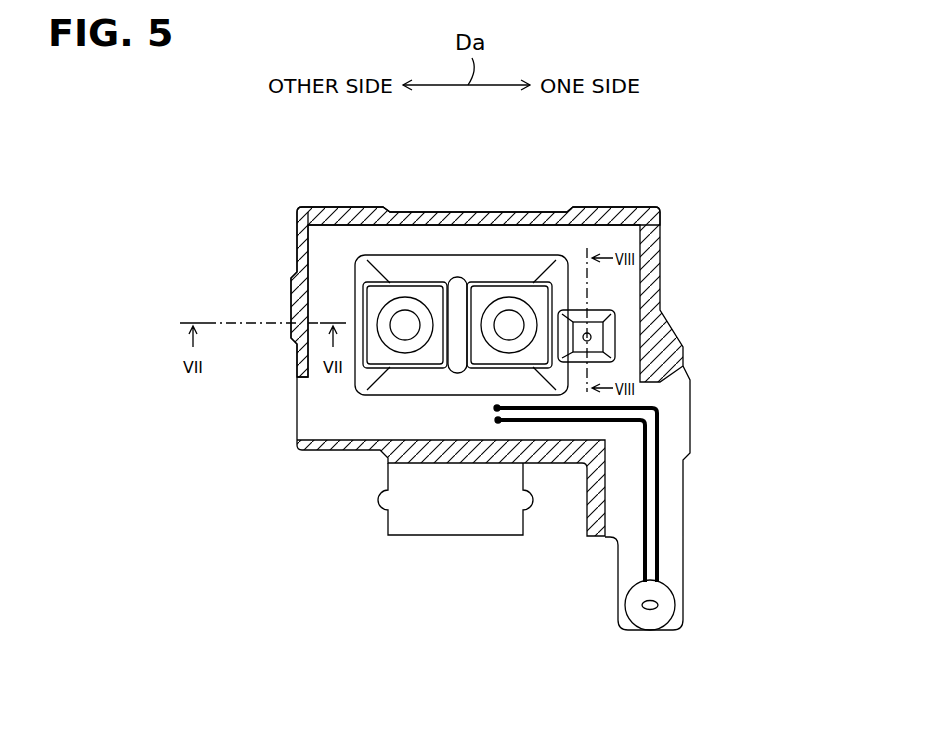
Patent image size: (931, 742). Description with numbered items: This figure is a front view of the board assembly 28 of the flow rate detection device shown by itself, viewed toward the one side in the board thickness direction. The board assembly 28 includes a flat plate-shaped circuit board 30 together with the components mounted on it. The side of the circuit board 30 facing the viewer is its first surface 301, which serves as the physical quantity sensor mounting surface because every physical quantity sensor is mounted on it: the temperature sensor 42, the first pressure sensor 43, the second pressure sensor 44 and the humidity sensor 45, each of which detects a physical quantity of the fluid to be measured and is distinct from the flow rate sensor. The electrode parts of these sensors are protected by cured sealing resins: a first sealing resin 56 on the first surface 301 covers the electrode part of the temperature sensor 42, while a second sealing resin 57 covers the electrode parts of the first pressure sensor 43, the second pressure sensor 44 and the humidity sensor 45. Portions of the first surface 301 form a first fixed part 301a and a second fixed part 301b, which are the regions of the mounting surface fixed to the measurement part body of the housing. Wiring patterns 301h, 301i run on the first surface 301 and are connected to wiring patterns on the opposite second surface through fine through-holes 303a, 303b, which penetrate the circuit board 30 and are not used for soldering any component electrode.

The board assembly 28 is at (438, 360).
The circuit board 30 is at (696, 529).
The temperature sensor 42 is at (652, 612).
The first pressure sensor 43 is at (535, 295).
The second pressure sensor 44 is at (432, 292).
The humidity sensor 45 is at (592, 337).
The first sealing resin 56 is at (668, 598).
The second sealing resin 57 is at (461, 273).
The first surface 301 is at (313, 418).
The first fixed part 301a is at (372, 215).
The second fixed part 301b is at (588, 492).
The wiring pattern 301h is at (647, 542).
The wiring pattern 301i is at (659, 500).
The through-hole 303a is at (498, 420).
The through-hole 303b is at (497, 408).